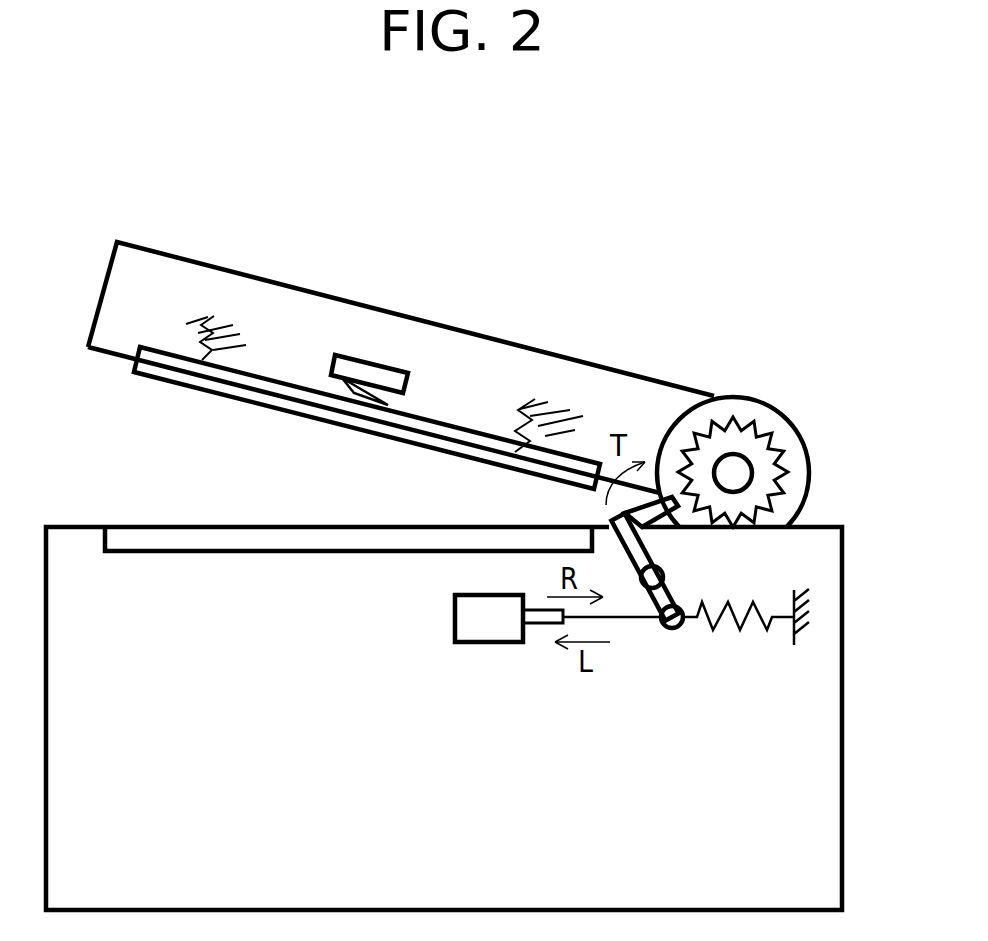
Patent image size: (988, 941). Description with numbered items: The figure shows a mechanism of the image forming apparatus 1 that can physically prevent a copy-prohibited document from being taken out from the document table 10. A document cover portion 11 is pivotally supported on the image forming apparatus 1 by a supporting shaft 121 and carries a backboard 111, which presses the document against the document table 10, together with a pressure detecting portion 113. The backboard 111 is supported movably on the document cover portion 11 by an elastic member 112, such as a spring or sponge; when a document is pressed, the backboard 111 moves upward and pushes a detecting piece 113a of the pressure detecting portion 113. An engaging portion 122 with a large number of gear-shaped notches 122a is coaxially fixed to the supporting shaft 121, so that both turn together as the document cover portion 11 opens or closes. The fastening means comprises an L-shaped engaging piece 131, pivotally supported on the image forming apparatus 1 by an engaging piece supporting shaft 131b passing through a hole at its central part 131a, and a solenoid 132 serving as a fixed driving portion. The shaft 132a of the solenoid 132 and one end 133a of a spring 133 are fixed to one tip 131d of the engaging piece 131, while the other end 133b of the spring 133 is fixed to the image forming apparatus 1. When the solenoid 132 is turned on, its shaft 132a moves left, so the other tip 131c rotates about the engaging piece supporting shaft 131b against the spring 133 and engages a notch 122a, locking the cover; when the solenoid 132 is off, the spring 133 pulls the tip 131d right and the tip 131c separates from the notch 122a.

The image forming apparatus 1 is at (691, 238).
The document table 10 is at (173, 551).
The document cover portion 11 is at (501, 339).
The backboard 111 is at (197, 377).
The elastic member 112 is at (200, 358).
The pressure detecting portion 113 is at (372, 370).
The detecting piece 113a is at (356, 398).
The supporting shaft 121 is at (743, 473).
The engaging portion 122 is at (768, 437).
The notches 122a is at (747, 423).
The engaging piece 131 is at (641, 530).
The central part of the engaging piece 131a is at (680, 553).
The engaging piece supporting shaft 131b is at (642, 580).
The tip of the engaging piece 131c is at (672, 492).
The tip of the engaging piece 131d is at (681, 630).
The solenoid 132 is at (480, 635).
The shaft of the solenoid 132a is at (632, 617).
The spring 133 is at (752, 602).
The end of the spring 133a is at (685, 625).
The other end of the spring 133b is at (807, 618).